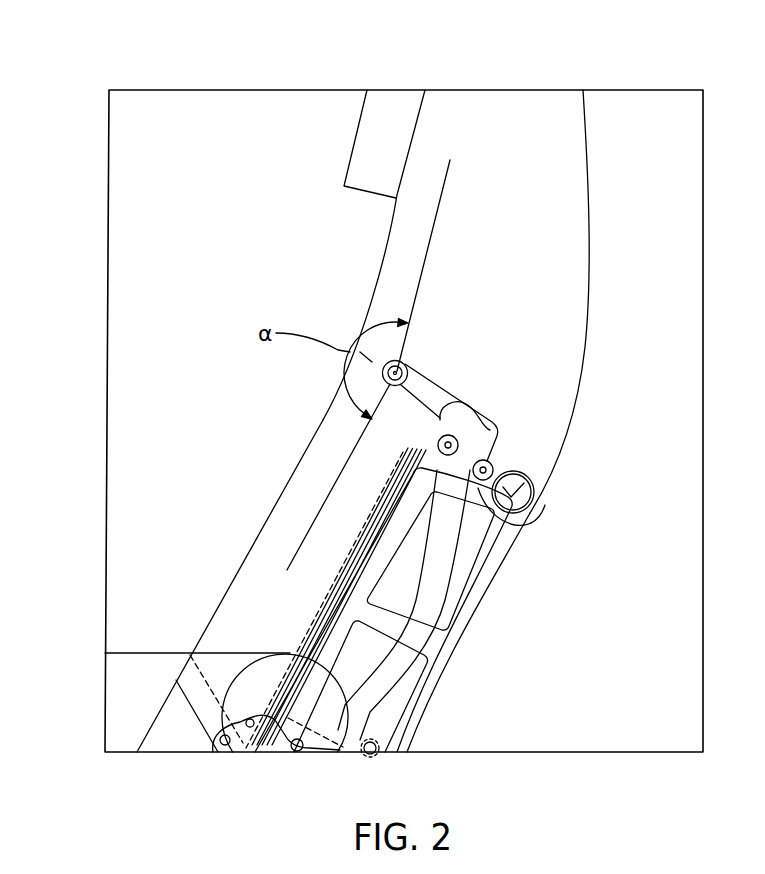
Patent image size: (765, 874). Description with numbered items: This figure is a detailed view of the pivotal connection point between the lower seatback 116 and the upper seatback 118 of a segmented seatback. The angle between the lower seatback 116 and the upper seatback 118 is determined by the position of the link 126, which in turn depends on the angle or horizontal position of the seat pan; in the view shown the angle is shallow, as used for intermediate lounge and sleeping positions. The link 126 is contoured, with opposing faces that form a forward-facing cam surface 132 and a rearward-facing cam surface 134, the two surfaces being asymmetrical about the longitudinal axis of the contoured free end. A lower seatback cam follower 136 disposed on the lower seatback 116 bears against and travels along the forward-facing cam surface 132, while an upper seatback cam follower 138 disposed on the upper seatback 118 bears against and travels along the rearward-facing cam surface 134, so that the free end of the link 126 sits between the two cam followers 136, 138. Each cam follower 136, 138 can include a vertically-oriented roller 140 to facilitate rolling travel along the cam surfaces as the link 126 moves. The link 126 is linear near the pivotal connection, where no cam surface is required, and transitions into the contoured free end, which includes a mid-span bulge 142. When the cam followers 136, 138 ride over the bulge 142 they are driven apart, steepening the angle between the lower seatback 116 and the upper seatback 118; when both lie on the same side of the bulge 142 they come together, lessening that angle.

The lower seatback 116 is at (268, 582).
The upper seatback 118 is at (550, 127).
The link 126 is at (440, 565).
The forward-facing cam surface 132 is at (441, 516).
The rearward-facing cam surface 134 is at (456, 551).
The lower seatback cam follower 136 is at (460, 407).
The upper seatback cam follower 138 is at (515, 468).
The vertically-oriented roller 140 is at (450, 434).
The mid-span bulge 142 is at (423, 480).